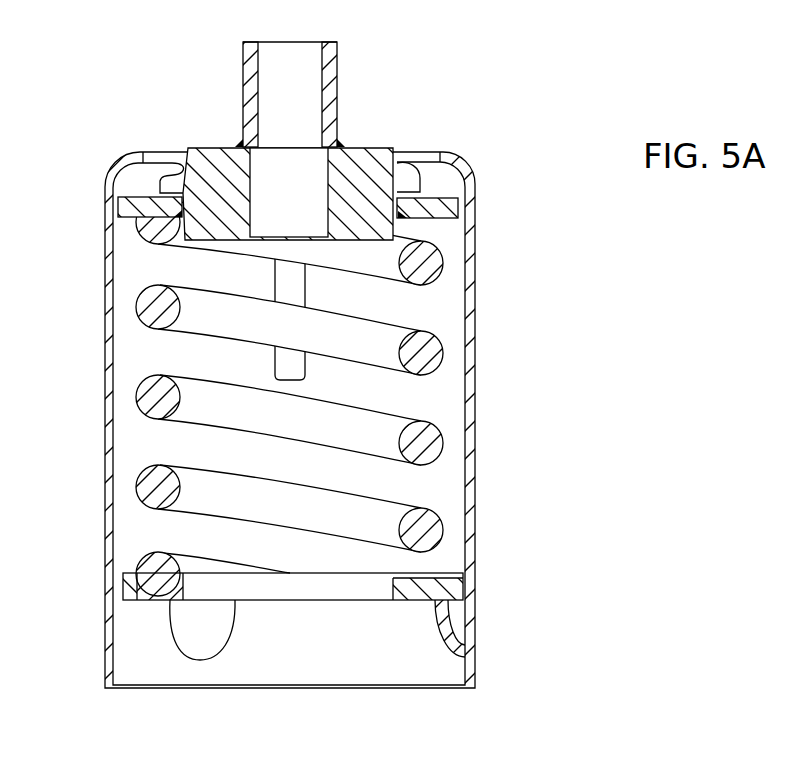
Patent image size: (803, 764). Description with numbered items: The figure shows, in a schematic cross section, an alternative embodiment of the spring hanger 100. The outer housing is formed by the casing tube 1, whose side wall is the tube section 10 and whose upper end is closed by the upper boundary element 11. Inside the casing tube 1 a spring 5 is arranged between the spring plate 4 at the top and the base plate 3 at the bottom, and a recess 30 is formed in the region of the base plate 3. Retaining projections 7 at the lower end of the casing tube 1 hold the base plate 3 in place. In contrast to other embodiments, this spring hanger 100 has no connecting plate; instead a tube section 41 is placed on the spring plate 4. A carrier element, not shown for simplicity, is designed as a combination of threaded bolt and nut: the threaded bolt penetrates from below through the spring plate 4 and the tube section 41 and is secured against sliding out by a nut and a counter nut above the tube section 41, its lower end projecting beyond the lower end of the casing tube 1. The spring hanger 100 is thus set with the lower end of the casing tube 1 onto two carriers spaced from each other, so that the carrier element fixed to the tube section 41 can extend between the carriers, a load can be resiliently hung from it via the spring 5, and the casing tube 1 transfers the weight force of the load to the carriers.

The spring hanger 100 is at (490, 80).
The casing tube 1 is at (478, 451).
The tube section 10 is at (467, 315).
The upper boundary element 11 is at (460, 167).
The spring plate 4 is at (448, 210).
The tube section 41 is at (333, 90).
The spring 5 is at (423, 356).
The recess 30 is at (295, 592).
The base plate 3 is at (443, 587).
The retaining projection 7 is at (205, 627).